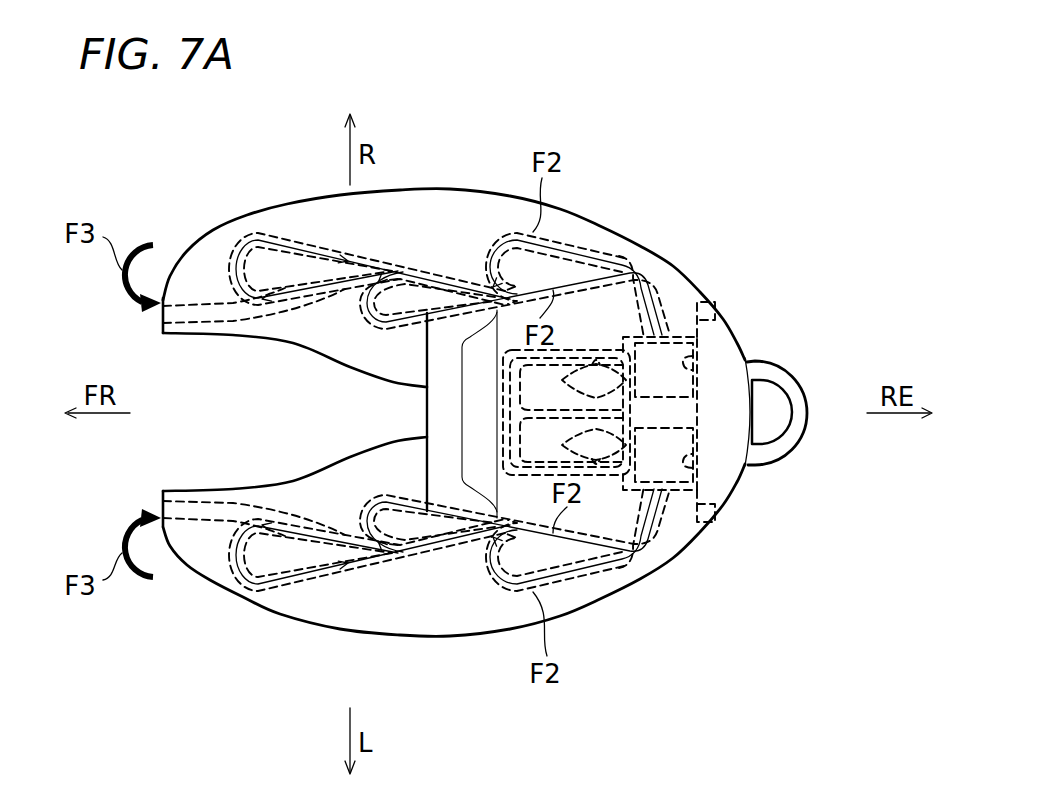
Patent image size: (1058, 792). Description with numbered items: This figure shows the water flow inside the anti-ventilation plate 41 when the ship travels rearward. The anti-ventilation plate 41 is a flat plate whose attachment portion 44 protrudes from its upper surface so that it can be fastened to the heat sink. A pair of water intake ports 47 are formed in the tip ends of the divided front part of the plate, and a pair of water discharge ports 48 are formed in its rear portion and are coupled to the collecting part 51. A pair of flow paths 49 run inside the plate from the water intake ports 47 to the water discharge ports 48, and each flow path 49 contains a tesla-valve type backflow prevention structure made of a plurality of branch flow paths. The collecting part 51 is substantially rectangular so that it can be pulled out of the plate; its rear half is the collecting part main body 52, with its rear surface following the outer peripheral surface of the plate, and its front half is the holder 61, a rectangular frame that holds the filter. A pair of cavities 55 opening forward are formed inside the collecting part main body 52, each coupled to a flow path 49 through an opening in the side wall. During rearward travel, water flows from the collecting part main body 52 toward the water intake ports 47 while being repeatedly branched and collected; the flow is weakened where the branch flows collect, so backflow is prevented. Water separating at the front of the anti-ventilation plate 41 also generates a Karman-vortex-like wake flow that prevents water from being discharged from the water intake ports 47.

The anti-ventilation plate 41 is at (585, 205).
The attachment portion 44 is at (427, 409).
The water intake ports 47 is at (160, 314).
The water discharge ports 48 is at (597, 360).
The flow paths 49 is at (437, 277).
The collecting part 51 is at (762, 351).
The collecting part main body 52 is at (733, 342).
The cavities 55 is at (697, 368).
The holder 61 is at (560, 350).